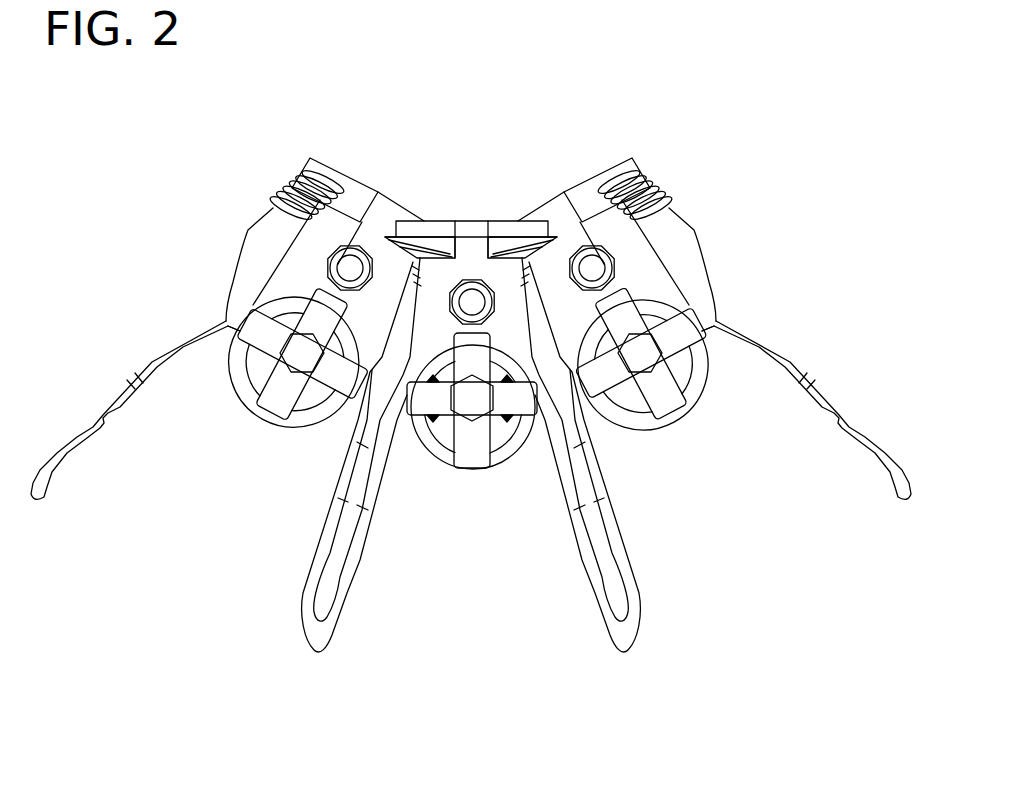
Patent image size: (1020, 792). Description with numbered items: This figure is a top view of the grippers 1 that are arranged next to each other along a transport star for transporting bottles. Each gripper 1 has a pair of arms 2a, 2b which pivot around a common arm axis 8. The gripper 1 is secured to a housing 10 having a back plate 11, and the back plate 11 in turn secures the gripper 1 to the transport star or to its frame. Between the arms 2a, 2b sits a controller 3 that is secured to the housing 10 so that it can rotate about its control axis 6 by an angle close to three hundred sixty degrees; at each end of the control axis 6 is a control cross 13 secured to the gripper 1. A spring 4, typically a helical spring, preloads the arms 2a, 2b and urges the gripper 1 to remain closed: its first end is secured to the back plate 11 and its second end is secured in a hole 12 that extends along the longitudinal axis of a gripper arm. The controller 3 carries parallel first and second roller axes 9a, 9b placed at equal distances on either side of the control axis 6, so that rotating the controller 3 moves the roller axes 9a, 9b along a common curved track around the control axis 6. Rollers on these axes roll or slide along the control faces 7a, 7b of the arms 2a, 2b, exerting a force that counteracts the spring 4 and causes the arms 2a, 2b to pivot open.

The gripper 1 is at (427, 110).
The arm 2a is at (150, 364).
The arm 2b is at (777, 352).
The controller 3 is at (263, 430).
The spring 4 is at (297, 187).
The control axis 6 is at (293, 355).
The control face 7a is at (236, 316).
The control face 7b is at (706, 316).
The arm axis 8 is at (350, 268).
The first roller axis 9a is at (428, 425).
The second roller axis 9b is at (514, 425).
The housing 10 is at (302, 256).
The back plate 11 is at (318, 158).
The hole 12 is at (272, 190).
The control cross 13 is at (273, 400).